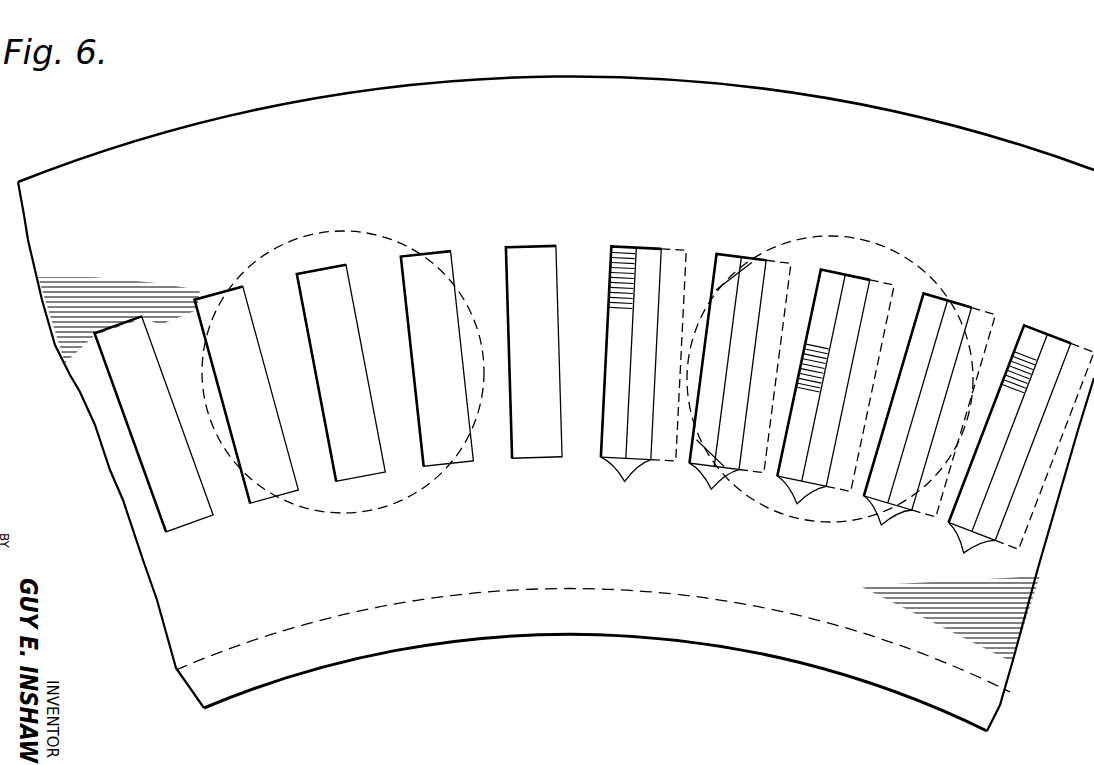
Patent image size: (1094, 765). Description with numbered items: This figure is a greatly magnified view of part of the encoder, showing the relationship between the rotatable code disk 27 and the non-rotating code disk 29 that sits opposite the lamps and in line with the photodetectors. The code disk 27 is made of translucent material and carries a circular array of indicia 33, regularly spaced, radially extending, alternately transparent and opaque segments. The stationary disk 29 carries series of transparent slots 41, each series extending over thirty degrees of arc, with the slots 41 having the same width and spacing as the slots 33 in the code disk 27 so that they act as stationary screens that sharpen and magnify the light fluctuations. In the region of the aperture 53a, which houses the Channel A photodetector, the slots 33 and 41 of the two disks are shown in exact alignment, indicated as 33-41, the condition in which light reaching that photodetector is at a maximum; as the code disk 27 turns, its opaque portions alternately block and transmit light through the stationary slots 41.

The code disk 27 is at (353, 92).
The non-rotating code disk 29 is at (450, 597).
The indicia 33 is at (835, 403).
The slots 41 is at (648, 232).
The aligned slots 33-41 is at (186, 523).
The aperture 53a is at (348, 232).